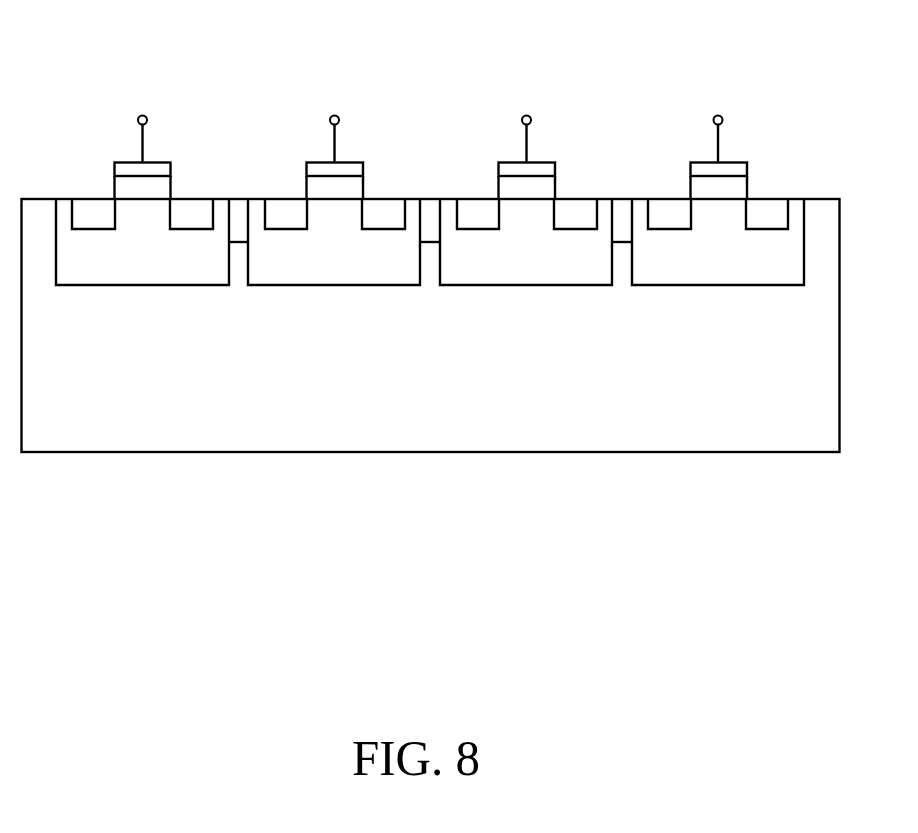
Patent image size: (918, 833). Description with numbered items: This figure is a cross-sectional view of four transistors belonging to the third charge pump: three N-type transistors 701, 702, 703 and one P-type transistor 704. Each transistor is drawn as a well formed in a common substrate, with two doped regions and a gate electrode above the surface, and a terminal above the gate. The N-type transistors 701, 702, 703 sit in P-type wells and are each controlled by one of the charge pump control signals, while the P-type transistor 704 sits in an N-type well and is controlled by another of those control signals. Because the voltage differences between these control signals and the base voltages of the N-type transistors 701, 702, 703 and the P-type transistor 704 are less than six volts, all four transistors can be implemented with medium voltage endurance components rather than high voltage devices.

The N-type transistor 701 is at (229, 83).
The N-type transistor 702 is at (421, 83).
The N-type transistor 703 is at (613, 83).
The P-type transistor 704 is at (804, 83).